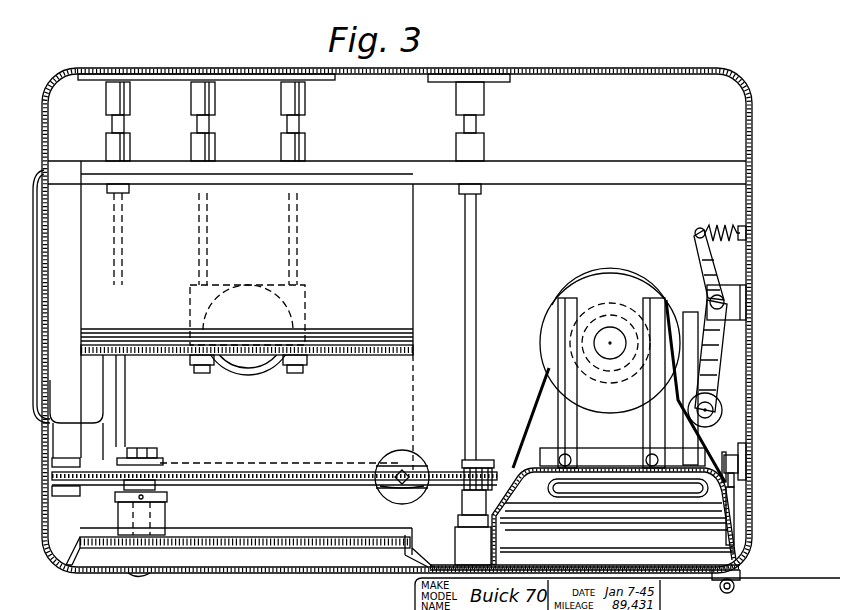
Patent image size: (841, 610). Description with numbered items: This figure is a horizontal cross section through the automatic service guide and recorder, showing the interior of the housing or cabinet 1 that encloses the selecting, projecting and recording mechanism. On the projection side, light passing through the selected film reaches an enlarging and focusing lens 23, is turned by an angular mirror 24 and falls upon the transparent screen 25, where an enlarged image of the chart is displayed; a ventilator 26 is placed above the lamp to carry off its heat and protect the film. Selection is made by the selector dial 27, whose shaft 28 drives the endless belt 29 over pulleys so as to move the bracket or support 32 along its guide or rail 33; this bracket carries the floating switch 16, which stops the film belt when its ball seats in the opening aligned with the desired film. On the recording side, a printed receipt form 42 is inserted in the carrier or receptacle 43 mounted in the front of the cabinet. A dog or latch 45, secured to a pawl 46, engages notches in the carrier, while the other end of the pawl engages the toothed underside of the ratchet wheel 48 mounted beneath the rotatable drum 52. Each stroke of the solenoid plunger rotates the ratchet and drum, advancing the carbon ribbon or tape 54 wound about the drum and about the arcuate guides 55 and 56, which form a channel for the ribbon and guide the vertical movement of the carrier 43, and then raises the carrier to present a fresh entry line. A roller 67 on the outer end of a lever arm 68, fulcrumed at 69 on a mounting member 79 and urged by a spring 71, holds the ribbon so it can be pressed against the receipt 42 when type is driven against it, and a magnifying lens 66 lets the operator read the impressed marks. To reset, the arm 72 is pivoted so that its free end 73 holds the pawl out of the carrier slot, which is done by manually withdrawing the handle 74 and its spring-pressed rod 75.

The housing or cabinet 1 is at (761, 99).
The floating switch 16 is at (392, 497).
The enlarging and focusing lens 23 is at (248, 290).
The angular mirror 24 is at (388, 268).
The transparent screen 25 is at (302, 550).
The ventilator 26 is at (46, 192).
The selector dial 27 is at (138, 577).
The shaft 28 is at (167, 512).
The endless belt 29 is at (262, 472).
The bracket or support 32 is at (384, 466).
The guide or rail 33 is at (88, 486).
The printed receipt form 42 is at (638, 500).
The carrier or receptacle 43 is at (545, 500).
The dog or latch 45 is at (668, 444).
The pawl 46 is at (660, 412).
The ratchet wheel 48 is at (619, 274).
The rotatable drum 52 is at (598, 298).
The carbon ribbon or tape 54 is at (546, 385).
The arcuate guide 55 is at (528, 468).
The arcuate guide 56 is at (720, 490).
The magnifying lens 66 is at (604, 515).
The roller 67 is at (724, 410).
The lever arm 68 is at (722, 342).
The fulcrum 69 is at (710, 301).
The spring 71 is at (730, 218).
The arm 72 is at (746, 464).
The free end 73 is at (678, 478).
The handle 74 is at (736, 587).
The rod 75 is at (735, 496).
The pivot bracket 79 is at (748, 284).